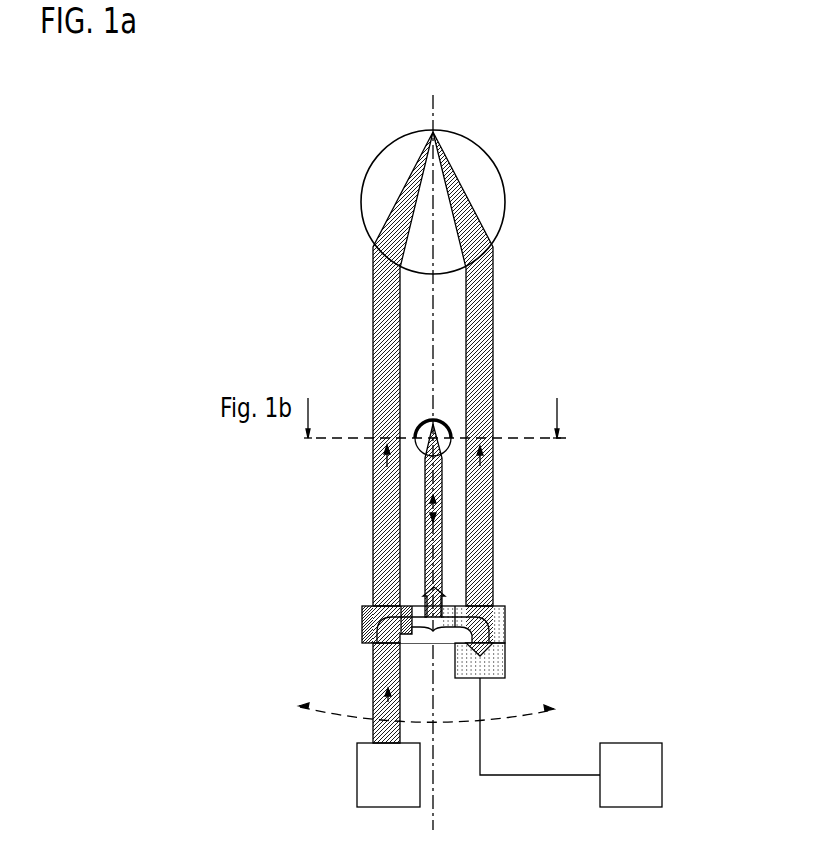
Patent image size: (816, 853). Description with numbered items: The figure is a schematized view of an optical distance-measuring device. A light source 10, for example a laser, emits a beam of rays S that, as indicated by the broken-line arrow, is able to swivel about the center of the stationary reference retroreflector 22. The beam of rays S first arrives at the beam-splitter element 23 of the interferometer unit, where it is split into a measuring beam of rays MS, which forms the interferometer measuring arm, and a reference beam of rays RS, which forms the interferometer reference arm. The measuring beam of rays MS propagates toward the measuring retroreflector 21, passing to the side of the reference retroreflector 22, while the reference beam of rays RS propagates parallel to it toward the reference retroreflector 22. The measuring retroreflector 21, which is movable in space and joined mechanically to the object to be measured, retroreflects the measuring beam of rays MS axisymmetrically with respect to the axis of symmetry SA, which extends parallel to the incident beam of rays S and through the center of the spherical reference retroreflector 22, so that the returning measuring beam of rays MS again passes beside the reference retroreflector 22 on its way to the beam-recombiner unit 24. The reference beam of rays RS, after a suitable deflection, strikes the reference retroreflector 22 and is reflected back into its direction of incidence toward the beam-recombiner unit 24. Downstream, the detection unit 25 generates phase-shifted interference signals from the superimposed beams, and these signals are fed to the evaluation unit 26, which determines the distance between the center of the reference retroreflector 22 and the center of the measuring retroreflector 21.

The axis of symmetry SA is at (437, 105).
The measuring retroreflector 21 is at (498, 166).
The measuring beam of rays MS is at (388, 302).
The reference retroreflector 22 is at (443, 424).
The reference beam of rays RS is at (433, 550).
The beam-splitter element 23 is at (365, 607).
The beam-recombiner unit 24 is at (500, 623).
The detection unit 25 is at (488, 661).
The beam of rays S is at (387, 663).
The light source 10 is at (383, 777).
The evaluation unit 26 is at (645, 777).